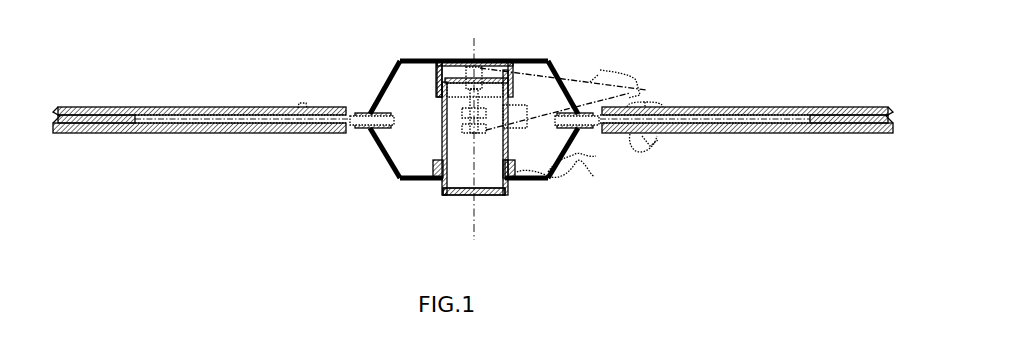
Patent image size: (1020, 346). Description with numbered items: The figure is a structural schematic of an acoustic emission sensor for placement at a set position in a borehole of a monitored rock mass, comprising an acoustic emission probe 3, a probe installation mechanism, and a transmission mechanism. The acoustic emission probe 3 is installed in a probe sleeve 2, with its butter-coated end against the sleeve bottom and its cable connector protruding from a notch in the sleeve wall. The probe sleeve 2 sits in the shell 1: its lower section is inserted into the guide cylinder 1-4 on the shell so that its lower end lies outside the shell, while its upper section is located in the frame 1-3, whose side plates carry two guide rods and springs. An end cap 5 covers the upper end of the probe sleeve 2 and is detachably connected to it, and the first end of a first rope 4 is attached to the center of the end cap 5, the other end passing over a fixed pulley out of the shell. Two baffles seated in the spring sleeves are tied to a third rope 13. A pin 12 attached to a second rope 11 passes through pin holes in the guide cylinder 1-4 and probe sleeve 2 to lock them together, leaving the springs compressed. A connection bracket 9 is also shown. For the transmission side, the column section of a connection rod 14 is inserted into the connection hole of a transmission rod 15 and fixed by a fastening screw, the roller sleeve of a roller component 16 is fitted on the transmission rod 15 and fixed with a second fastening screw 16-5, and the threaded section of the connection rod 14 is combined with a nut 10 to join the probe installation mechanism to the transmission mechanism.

The shell 1 is at (470, 80).
The frame 1-3 is at (437, 75).
The guide cylinder 1-4 is at (522, 182).
The probe sleeve 2 is at (493, 195).
The acoustic emission probe 3 is at (460, 178).
The first rope 4 is at (478, 70).
The end cap 5 is at (490, 82).
The connection bracket 9 is at (560, 83).
The nut 10 is at (578, 112).
The second rope 11 is at (563, 173).
The pin 12 is at (527, 178).
The third rope 13 is at (597, 156).
The connection rod 14 is at (220, 117).
The transmission rod 15 is at (280, 113).
The roller component 16 is at (650, 146).
The second fastening screw 16-5 is at (645, 103).